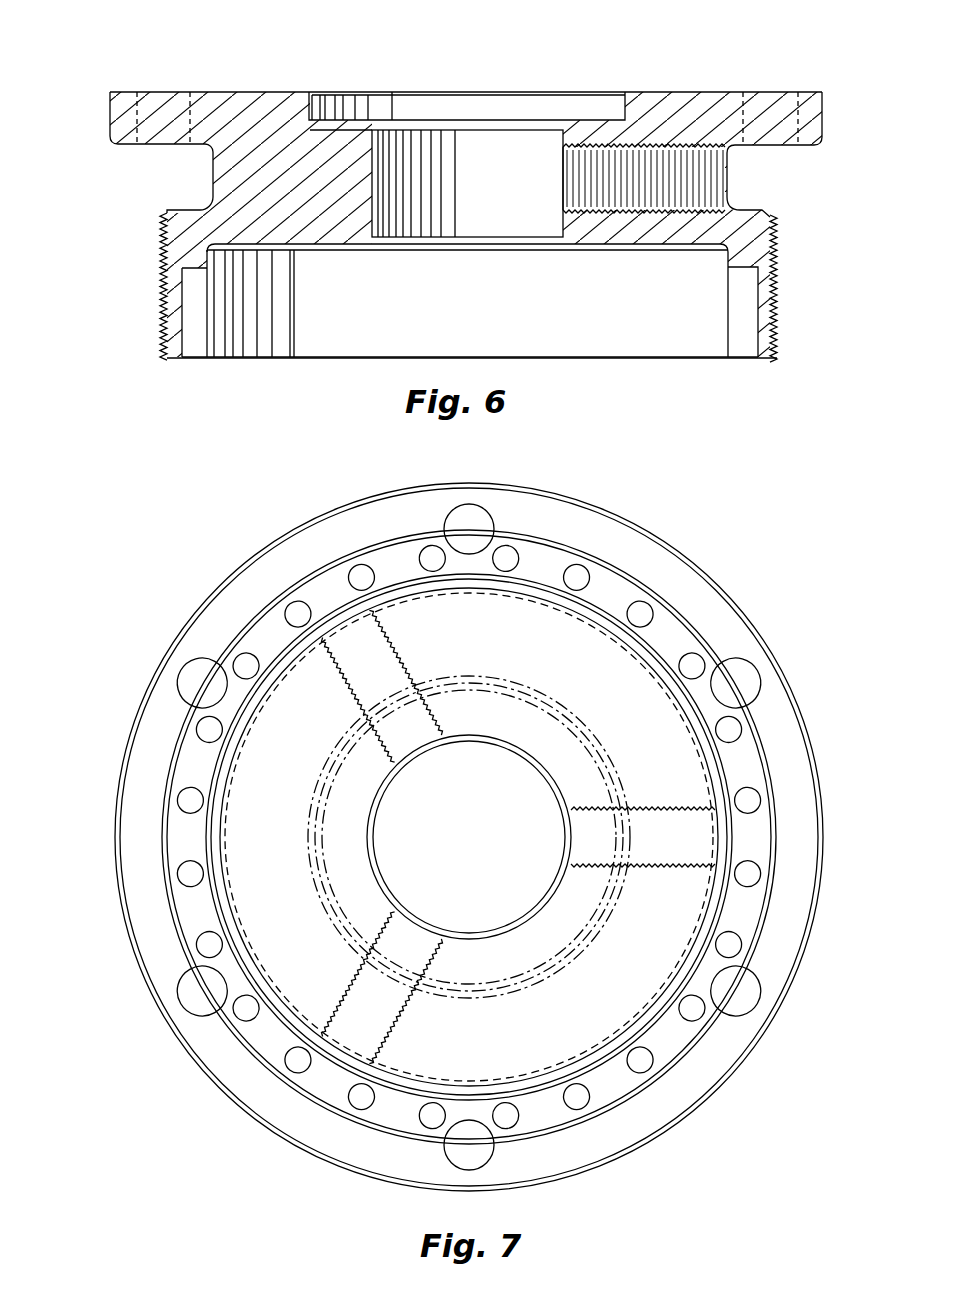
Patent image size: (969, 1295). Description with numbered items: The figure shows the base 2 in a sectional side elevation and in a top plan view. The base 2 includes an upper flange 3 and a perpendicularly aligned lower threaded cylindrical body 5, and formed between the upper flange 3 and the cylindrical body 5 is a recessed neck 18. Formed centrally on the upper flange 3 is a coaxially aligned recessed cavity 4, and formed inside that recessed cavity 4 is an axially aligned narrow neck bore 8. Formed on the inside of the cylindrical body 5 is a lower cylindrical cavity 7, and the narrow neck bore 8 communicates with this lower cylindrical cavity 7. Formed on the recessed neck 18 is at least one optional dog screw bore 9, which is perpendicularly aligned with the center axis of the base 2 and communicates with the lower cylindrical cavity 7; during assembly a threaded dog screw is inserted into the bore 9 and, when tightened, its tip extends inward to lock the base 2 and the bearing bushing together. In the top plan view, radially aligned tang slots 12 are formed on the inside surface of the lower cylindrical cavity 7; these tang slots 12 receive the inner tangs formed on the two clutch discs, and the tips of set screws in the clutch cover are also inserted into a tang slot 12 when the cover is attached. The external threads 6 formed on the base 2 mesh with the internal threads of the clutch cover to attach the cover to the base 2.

In FIG. 6, the base 2 is at (98, 89).
In FIG. 7, the base 2 is at (146, 616).
In FIG. 6, the upper flange 3 is at (815, 122).
In FIG. 7, the upper flange 3 is at (745, 605).
In FIG. 6, the recessed cavity 4 is at (468, 110).
In FIG. 7, the recessed cavity 4 is at (540, 735).
In FIG. 6, the lower threaded cylindrical body 5 is at (780, 250).
In FIG. 7, the lower threaded cylindrical body 5 is at (765, 723).
In FIG. 6, the external threads 6 is at (776, 316).
In FIG. 6, the lower cylindrical cavity 7 is at (496, 306).
In FIG. 6, the narrow neck bore 8 is at (496, 196).
In FIG. 7, the narrow neck bore 8 is at (478, 850).
In FIG. 6, the dog screw bore 9 is at (733, 178).
In FIG. 7, the dog screw bore 9 is at (398, 657).
In FIG. 6, the tang slots 12 is at (195, 300).
In FIG. 7, the tang slots 12 is at (300, 617).
In FIG. 6, the recessed neck 18 is at (212, 170).